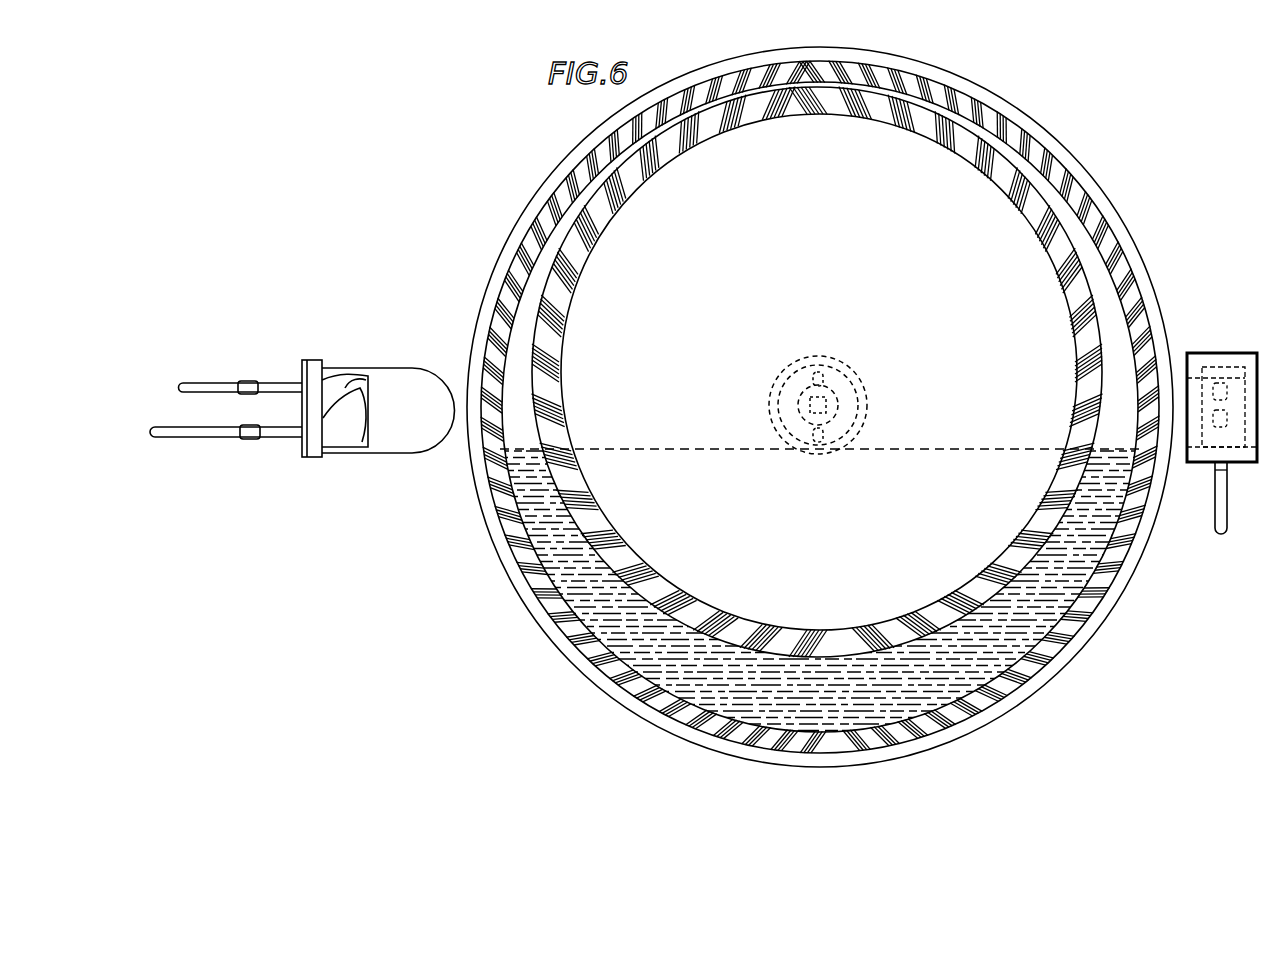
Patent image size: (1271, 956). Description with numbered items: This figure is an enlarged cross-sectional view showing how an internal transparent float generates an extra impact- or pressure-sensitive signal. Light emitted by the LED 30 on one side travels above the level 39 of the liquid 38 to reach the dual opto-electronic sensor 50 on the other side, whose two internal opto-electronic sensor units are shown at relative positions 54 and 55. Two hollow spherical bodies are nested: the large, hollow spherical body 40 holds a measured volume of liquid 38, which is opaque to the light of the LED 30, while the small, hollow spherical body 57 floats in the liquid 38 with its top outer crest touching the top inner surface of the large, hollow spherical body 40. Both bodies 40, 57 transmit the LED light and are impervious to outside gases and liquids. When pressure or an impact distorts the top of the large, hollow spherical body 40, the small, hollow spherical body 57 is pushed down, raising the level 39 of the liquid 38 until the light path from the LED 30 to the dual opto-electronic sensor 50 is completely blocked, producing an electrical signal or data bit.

The LED 30 is at (397, 384).
The liquid 38 is at (1110, 475).
The level 39 is at (957, 450).
The large, hollow spherical body 40 is at (518, 557).
The dual opto-electronic sensor 50 is at (1214, 420).
The opto-electronic sensor unit 54 is at (1220, 388).
The opto-electronic sensor unit 55 is at (1213, 422).
The small, hollow spherical body 57 is at (605, 530).